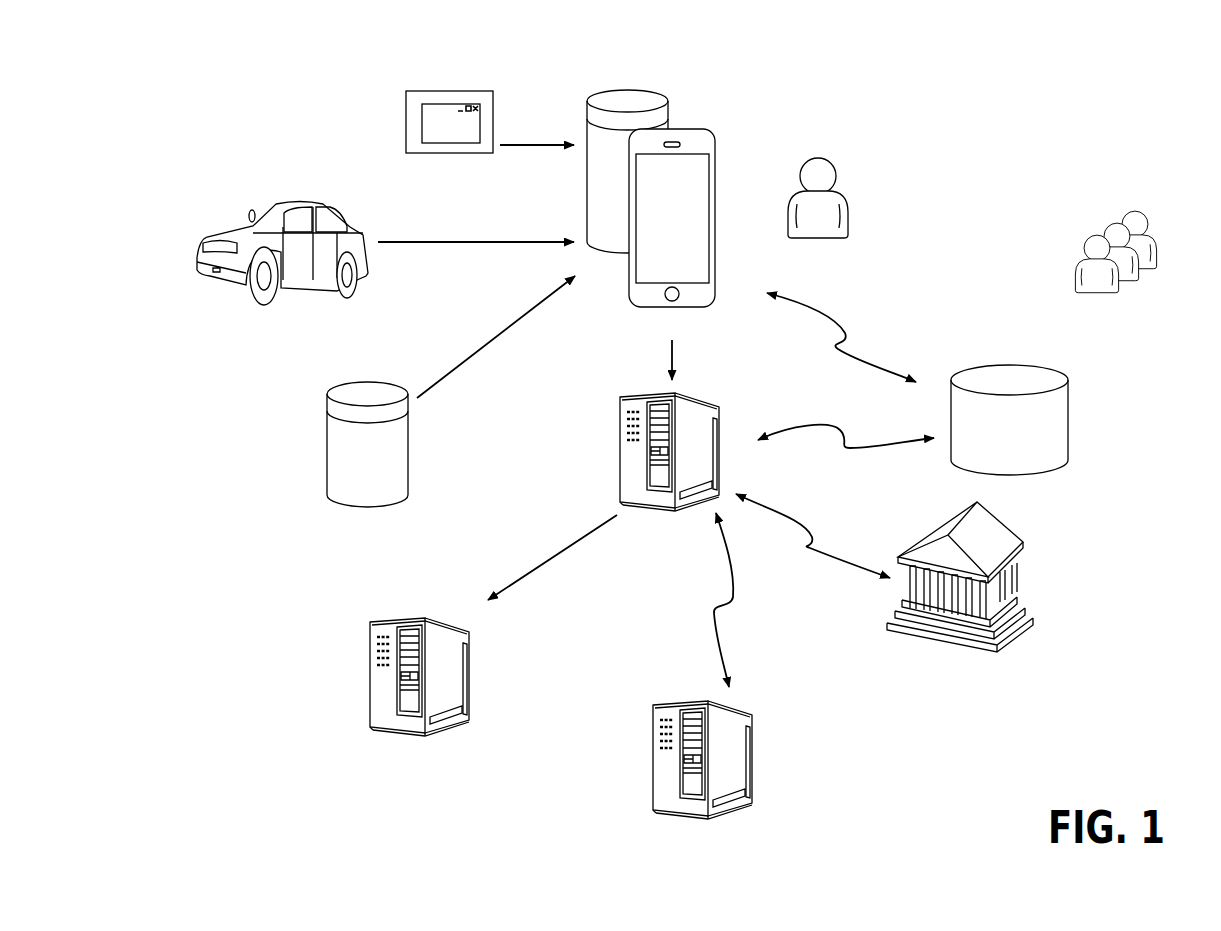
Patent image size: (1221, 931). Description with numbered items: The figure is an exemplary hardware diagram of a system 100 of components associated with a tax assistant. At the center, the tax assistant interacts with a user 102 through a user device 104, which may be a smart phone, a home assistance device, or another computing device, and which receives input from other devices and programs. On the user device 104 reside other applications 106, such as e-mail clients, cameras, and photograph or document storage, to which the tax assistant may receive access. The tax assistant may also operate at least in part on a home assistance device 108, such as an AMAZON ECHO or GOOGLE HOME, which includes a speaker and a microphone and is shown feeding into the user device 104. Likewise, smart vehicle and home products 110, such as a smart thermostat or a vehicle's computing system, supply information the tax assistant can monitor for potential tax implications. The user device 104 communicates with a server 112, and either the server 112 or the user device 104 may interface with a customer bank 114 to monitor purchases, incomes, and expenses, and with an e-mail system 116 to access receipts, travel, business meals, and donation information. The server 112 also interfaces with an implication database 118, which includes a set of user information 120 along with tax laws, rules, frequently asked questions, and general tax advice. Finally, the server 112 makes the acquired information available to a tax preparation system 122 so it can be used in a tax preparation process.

The system 100 is at (334, 91).
The user 102 is at (850, 193).
The user device 104 is at (715, 145).
The other applications 106 is at (400, 122).
The home assistance device 108 is at (323, 440).
The smart vehicle and home products 110 is at (250, 187).
The server 112 is at (620, 420).
The customer bank 114 is at (1015, 522).
The e-mail system 116 is at (652, 725).
The implication database 118 is at (1068, 407).
The user information 120 is at (1168, 211).
The tax preparation system 122 is at (370, 642).